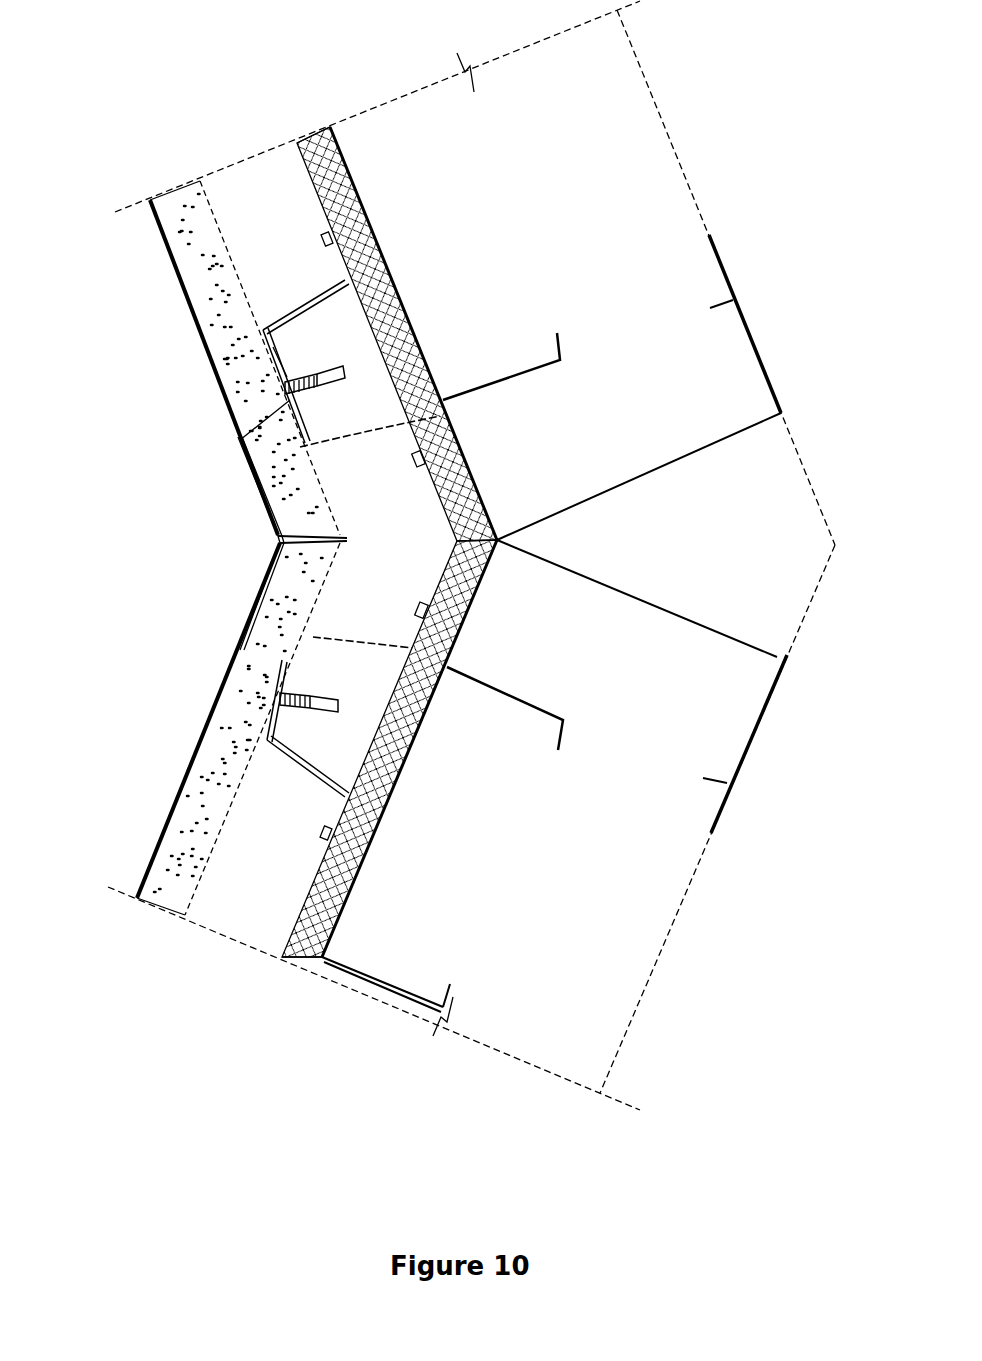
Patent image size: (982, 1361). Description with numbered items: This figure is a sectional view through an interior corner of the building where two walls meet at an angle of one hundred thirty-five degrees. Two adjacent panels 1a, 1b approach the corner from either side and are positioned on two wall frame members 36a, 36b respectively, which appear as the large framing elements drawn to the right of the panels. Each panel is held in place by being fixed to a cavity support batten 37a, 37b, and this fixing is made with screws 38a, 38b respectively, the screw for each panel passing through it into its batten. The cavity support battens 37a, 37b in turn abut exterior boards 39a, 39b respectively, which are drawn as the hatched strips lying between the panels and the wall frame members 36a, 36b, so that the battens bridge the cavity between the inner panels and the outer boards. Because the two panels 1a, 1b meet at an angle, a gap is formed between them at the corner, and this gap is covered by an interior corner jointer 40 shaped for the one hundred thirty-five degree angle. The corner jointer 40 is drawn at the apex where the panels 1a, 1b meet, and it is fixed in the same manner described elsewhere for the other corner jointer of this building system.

The panel 1a is at (152, 810).
The panel 1b is at (197, 308).
The wall frame member 36a is at (550, 1023).
The wall frame member 36b is at (425, 295).
The cavity support batten 37a is at (405, 650).
The cavity support batten 37b is at (340, 435).
The screw 38a is at (277, 693).
The screw 38b is at (287, 403).
The exterior board 39a is at (313, 960).
The exterior board 39b is at (328, 127).
The interior corner jointer 40 is at (213, 647).